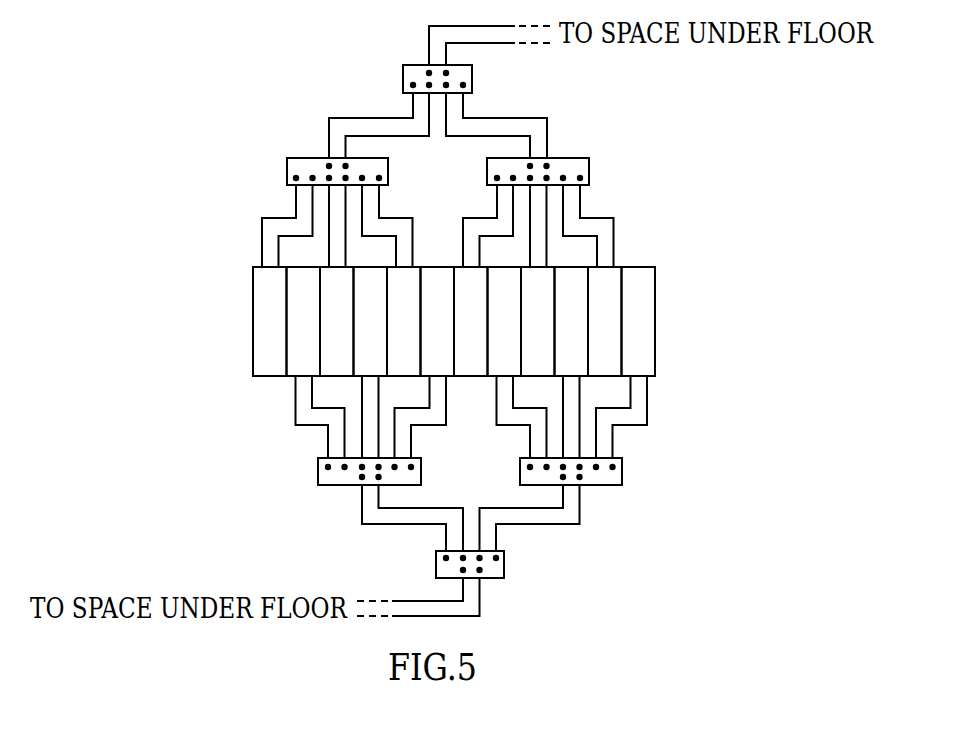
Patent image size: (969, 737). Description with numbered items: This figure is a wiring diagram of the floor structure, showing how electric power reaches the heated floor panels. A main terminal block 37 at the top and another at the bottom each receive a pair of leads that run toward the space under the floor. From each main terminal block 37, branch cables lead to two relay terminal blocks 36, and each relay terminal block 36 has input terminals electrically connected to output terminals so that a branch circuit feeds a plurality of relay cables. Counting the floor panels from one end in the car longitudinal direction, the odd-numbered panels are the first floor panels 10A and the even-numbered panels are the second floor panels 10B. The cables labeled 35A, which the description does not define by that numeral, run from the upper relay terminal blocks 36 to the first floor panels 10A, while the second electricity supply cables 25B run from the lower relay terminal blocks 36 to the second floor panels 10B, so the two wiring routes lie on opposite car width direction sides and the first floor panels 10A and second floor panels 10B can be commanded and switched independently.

The first floor panels 10A is at (273, 303).
The second floor panels 10B is at (372, 343).
The wiring harness to first batteries 35A is at (260, 216).
The second electricity supply cables 25B is at (291, 411).
The relay terminal block 36 is at (285, 175).
The main terminal block 37 is at (403, 80).